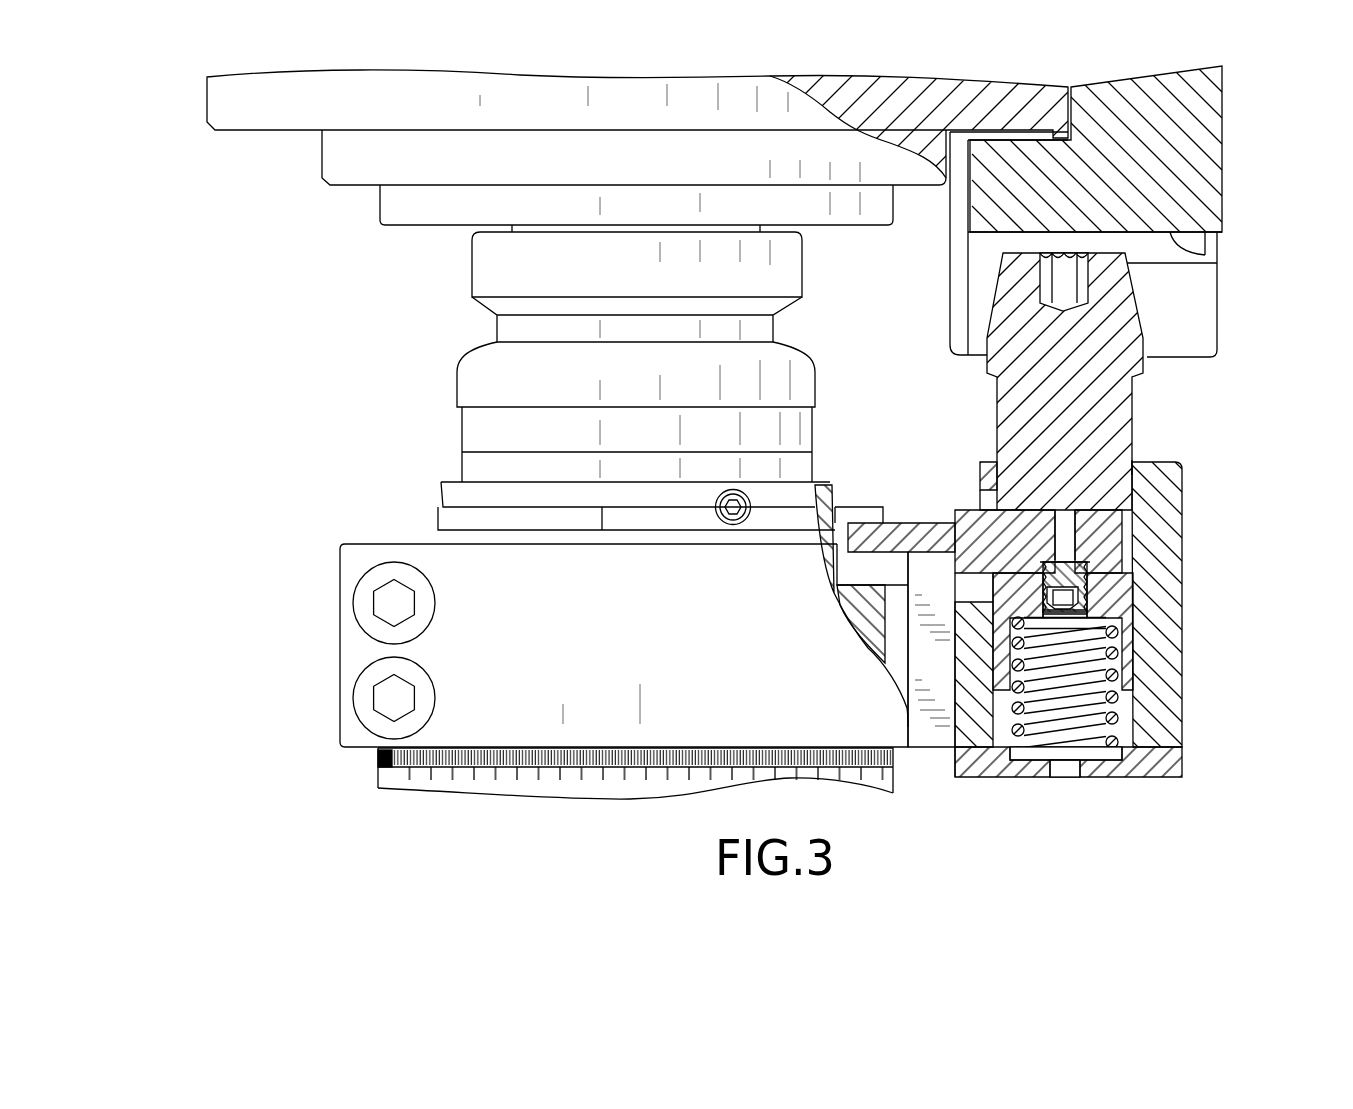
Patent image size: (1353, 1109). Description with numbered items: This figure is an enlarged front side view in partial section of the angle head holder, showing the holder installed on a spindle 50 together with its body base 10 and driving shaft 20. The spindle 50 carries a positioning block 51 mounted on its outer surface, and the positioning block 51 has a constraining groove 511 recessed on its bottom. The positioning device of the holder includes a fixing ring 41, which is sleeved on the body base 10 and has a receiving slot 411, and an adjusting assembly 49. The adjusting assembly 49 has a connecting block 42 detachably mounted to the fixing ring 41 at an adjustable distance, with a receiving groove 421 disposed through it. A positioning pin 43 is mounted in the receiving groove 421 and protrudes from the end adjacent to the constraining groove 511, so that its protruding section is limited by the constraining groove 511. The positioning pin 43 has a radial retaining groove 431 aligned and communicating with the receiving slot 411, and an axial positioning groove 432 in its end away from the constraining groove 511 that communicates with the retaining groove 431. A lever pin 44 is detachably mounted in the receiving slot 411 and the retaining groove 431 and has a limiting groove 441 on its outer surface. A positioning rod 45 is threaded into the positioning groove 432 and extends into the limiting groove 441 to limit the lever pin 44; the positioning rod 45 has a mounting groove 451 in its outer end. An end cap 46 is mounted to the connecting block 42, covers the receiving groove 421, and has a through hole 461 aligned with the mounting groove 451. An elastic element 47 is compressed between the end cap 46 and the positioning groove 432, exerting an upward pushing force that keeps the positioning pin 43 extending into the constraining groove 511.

The body base 10 is at (378, 787).
The driving shaft 20 is at (487, 262).
The fixing ring 41 is at (372, 528).
The receiving slot 411 is at (865, 570).
The connecting block 42 is at (1200, 451).
The receiving groove 421 is at (1132, 475).
The positioning pin 43 is at (1160, 316).
The retaining groove 431 is at (1120, 550).
The positioning groove 432 is at (1093, 693).
The lever pin 44 is at (926, 512).
The limiting groove 441 is at (1063, 552).
The positioning rod 45 is at (1103, 594).
The mounting groove 451 is at (1070, 612).
The end cap 46 is at (1185, 792).
The through hole 461 is at (1078, 770).
The elastic element 47 is at (1113, 700).
The adjusting assembly 49 is at (1150, 805).
The spindle 50 is at (195, 168).
The positioning block 51 is at (1232, 155).
The constraining groove 511 is at (1212, 253).